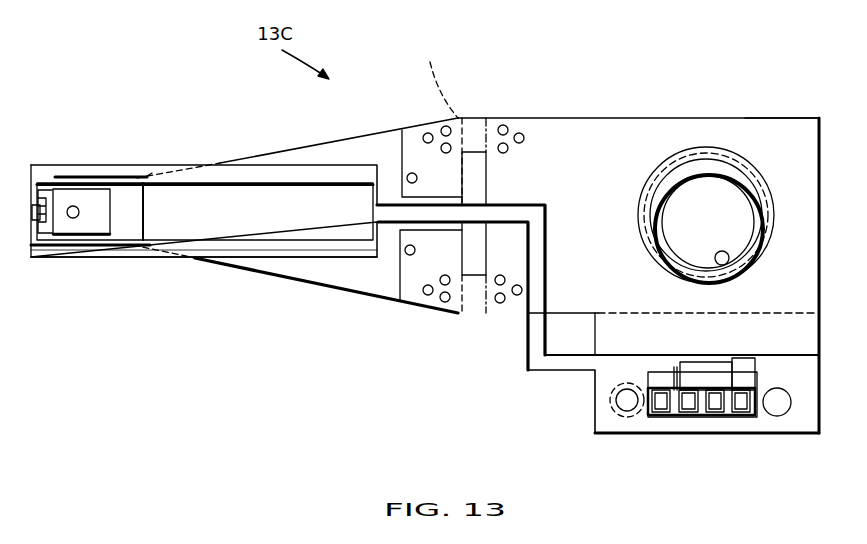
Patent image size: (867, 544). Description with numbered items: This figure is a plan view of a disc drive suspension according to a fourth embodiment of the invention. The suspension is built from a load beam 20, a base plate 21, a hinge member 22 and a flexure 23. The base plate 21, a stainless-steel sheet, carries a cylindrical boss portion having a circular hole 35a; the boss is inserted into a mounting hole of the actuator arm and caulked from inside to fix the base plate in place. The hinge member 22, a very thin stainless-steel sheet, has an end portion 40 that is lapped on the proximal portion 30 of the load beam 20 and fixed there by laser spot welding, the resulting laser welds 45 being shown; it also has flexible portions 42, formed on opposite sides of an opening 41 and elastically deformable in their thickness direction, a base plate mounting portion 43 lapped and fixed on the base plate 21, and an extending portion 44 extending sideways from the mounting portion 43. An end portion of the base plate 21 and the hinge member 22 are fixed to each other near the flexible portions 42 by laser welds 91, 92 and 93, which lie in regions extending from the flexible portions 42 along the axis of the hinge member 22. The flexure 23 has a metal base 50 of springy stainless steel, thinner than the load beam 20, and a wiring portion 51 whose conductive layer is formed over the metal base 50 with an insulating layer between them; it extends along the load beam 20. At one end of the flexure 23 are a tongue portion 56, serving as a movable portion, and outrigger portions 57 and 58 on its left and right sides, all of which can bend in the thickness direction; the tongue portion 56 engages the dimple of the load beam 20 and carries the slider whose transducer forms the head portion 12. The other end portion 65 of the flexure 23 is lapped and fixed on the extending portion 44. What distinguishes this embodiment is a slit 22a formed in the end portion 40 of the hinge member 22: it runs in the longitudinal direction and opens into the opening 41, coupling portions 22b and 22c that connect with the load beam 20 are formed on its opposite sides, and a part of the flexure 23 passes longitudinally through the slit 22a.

The head portion 12 is at (72, 261).
The load beam 20 is at (282, 148).
The base plate 21 is at (627, 130).
The hinge member 22 is at (543, 117).
The slit 22a is at (403, 287).
The coupling portion 22b is at (400, 143).
The coupling portion 22c is at (408, 222).
The flexure 23 is at (275, 265).
The proximal portion 30 is at (438, 77).
The circular hole 35a is at (730, 263).
The end portion 40 is at (458, 172).
The opening 41 is at (477, 193).
The flexible portions 42 is at (472, 120).
The base plate mounting portion 43 is at (762, 132).
The extending portion 44 is at (595, 405).
The laser welds 45 is at (412, 173).
The metal base 50 is at (297, 253).
The wiring portion 51 is at (538, 211).
The tongue portion 56 is at (100, 200).
The outrigger portion 57 is at (86, 173).
The outrigger portion 58 is at (104, 253).
The end portion 65 is at (763, 425).
The laser weld 91 is at (503, 125).
The laser weld 92 is at (525, 139).
The laser weld 93 is at (508, 151).